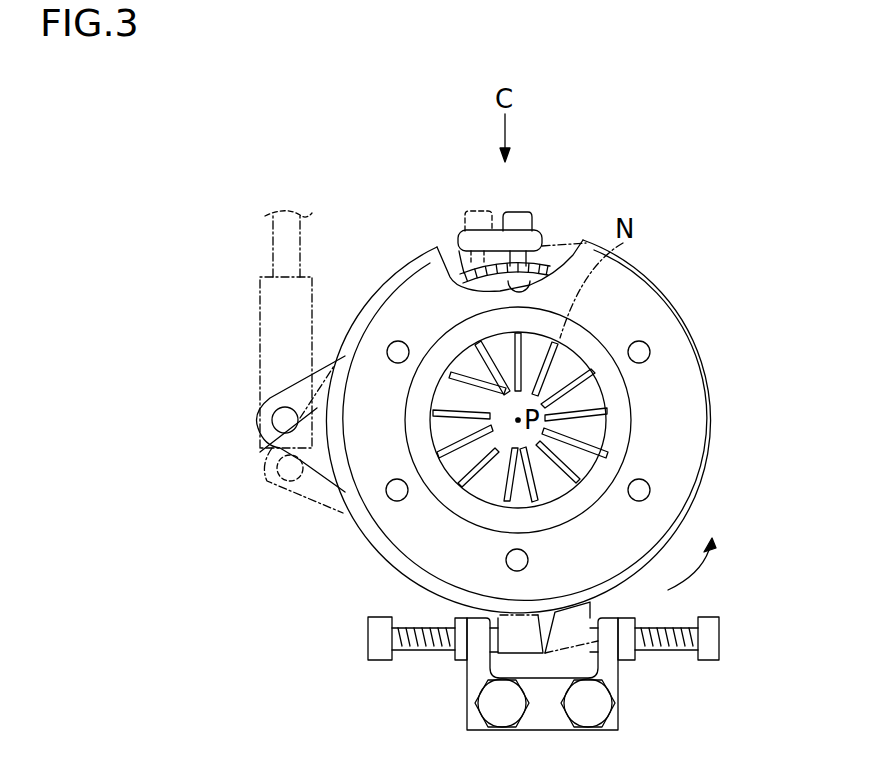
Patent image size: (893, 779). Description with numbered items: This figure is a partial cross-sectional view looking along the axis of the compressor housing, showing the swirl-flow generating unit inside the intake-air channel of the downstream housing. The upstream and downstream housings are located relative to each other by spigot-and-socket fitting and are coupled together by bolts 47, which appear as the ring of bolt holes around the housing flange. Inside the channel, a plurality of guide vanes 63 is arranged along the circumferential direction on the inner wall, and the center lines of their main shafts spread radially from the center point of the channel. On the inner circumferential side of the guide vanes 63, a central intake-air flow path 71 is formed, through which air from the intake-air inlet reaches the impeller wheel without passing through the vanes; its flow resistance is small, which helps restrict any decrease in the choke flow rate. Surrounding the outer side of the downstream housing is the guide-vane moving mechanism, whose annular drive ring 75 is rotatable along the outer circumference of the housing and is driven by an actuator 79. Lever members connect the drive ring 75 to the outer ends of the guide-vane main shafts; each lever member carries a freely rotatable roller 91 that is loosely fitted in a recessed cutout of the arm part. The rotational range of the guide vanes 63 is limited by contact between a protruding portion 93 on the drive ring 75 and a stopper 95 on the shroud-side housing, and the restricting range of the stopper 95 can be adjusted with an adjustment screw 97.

The bolts 47 is at (640, 480).
The guide vanes 63 is at (538, 392).
The central intake-air flow path 71 is at (508, 402).
The drive ring 75 is at (382, 556).
The actuator 79 is at (260, 308).
The roller 91 is at (538, 240).
The protruding portion 93 is at (513, 657).
The stopper 95 is at (612, 665).
The adjustment screw 97 is at (713, 612).